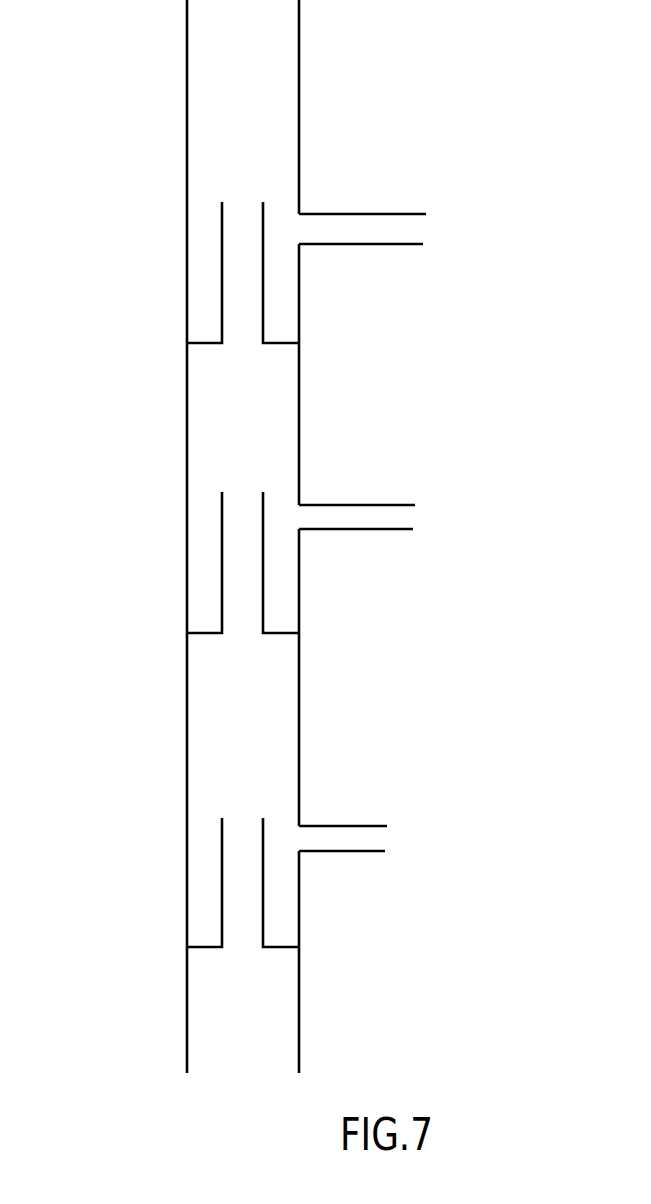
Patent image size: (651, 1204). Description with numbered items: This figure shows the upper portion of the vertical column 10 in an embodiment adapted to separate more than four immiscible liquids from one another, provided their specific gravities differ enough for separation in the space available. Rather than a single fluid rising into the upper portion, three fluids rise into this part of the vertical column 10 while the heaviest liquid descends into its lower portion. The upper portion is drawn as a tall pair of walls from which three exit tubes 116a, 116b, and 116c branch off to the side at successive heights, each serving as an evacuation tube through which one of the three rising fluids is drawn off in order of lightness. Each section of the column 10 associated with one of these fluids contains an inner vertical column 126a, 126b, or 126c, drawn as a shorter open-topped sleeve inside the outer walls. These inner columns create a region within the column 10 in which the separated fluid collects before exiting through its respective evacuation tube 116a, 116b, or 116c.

The vertical column 10 is at (164, 480).
The exit tube 116a is at (387, 837).
The exit tube 116b is at (417, 513).
The exit tube 116c is at (432, 225).
The inner vertical column 126a is at (261, 897).
The inner vertical column 126b is at (263, 587).
The inner vertical column 126c is at (263, 311).